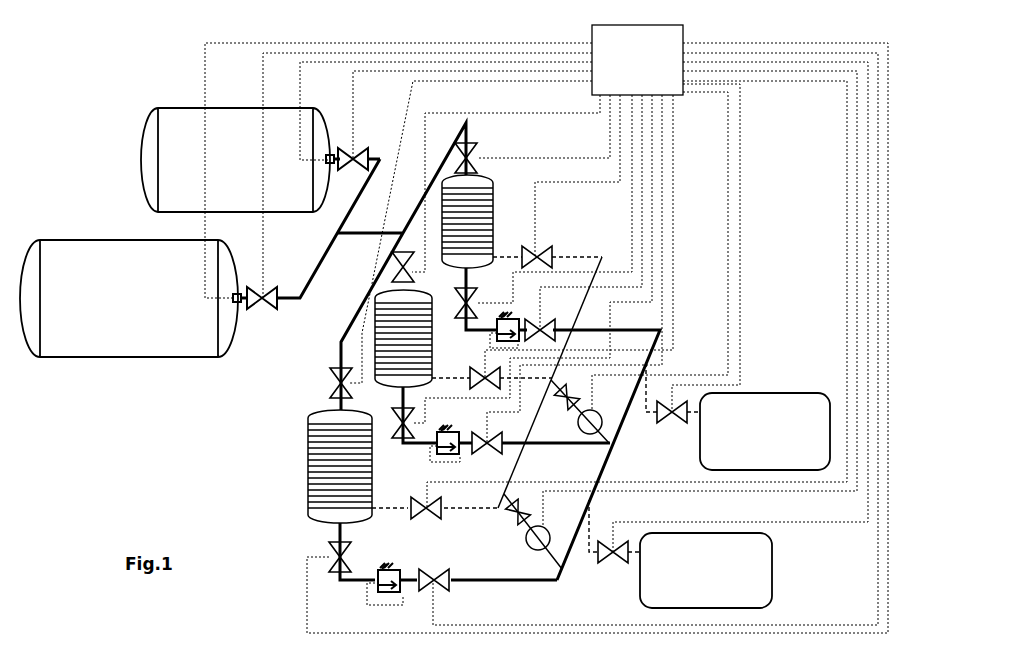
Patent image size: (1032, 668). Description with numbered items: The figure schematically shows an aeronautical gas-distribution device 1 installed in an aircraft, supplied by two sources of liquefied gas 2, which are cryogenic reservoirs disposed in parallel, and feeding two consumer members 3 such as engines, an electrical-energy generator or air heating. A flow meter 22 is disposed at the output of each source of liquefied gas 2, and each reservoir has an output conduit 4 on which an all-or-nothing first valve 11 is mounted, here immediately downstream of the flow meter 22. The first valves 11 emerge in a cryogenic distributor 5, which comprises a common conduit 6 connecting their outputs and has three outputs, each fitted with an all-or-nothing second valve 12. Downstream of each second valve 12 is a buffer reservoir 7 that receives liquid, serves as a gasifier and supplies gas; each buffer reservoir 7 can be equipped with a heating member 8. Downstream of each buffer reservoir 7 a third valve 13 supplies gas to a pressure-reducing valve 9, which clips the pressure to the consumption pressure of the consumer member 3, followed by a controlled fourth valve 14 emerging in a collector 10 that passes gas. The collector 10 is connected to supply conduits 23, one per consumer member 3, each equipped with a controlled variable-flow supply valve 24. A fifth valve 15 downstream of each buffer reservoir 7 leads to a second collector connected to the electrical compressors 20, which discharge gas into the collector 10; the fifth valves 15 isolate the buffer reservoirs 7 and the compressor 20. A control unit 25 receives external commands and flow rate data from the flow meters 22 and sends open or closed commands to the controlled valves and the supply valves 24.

The aeronautical gas-distribution device 1 is at (139, 447).
The source of liquefied gas 2 is at (175, 232).
The consumer member 3 is at (735, 500).
The output conduit 4 is at (292, 302).
The cryogenic distributor 5 is at (412, 120).
The common conduit 6 is at (360, 236).
The buffer reservoir 7 is at (496, 206).
The heating member 8 is at (310, 447).
The pressure-reducing valve 9 is at (512, 318).
The collector 10 is at (662, 350).
The first valve 11 is at (360, 150).
The second valve 12 is at (474, 152).
The third valve 13 is at (478, 300).
The fourth valve 14 is at (542, 316).
The fifth valve 15 is at (540, 245).
The compressor 20 is at (580, 414).
The flow meter 22 is at (332, 152).
The supply conduit 23 is at (654, 416).
The supply valve 24 is at (672, 424).
The control unit 25 is at (637, 60).